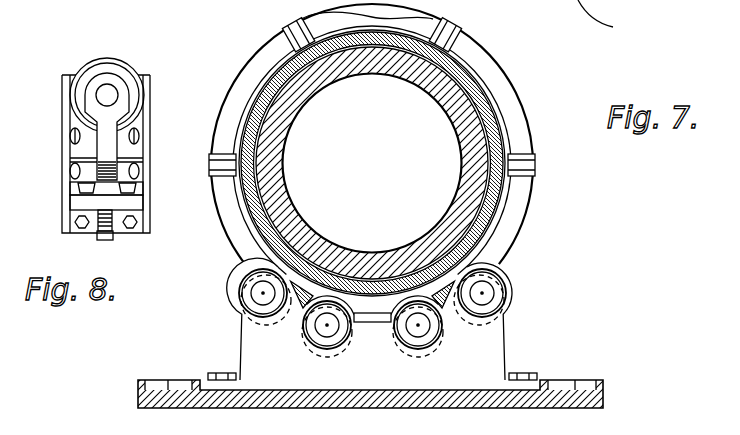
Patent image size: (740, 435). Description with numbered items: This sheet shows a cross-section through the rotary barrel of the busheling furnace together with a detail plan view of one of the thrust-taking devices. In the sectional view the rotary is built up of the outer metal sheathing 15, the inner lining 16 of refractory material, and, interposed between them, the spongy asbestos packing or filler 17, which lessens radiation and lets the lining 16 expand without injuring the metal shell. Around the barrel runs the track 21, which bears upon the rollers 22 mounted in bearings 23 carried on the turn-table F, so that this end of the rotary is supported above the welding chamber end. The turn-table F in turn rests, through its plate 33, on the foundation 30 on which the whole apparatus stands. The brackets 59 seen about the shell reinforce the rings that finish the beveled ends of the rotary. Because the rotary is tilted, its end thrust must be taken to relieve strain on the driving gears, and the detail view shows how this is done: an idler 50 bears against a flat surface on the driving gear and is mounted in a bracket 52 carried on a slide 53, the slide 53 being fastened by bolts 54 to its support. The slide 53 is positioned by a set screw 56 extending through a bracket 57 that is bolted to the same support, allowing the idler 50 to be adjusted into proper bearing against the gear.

In FIG. 7, the outer metal sheathing 15 is at (486, 126).
In FIG. 7, the inner lining 16 is at (458, 131).
In FIG. 7, the packing or filler 17 is at (490, 118).
In FIG. 7, the track 21 is at (505, 209).
In FIG. 7, the rollers 22 is at (242, 278).
In FIG. 7, the bearings 23 is at (272, 337).
In FIG. 7, the foundation 30 is at (610, 17).
In FIG. 7, the plate 33 is at (394, 11).
In FIG. 7, the brackets 59 is at (285, 30).
In FIG. 7, the turn-table F is at (371, 393).
In FIG. 8, the idlers 50 is at (78, 76).
In FIG. 8, the brackets 52 is at (73, 176).
In FIG. 8, the slides 53 is at (82, 190).
In FIG. 8, the bolts 54 is at (72, 139).
In FIG. 8, the set screws 56 is at (105, 240).
In FIG. 8, the brackets 57 is at (130, 207).